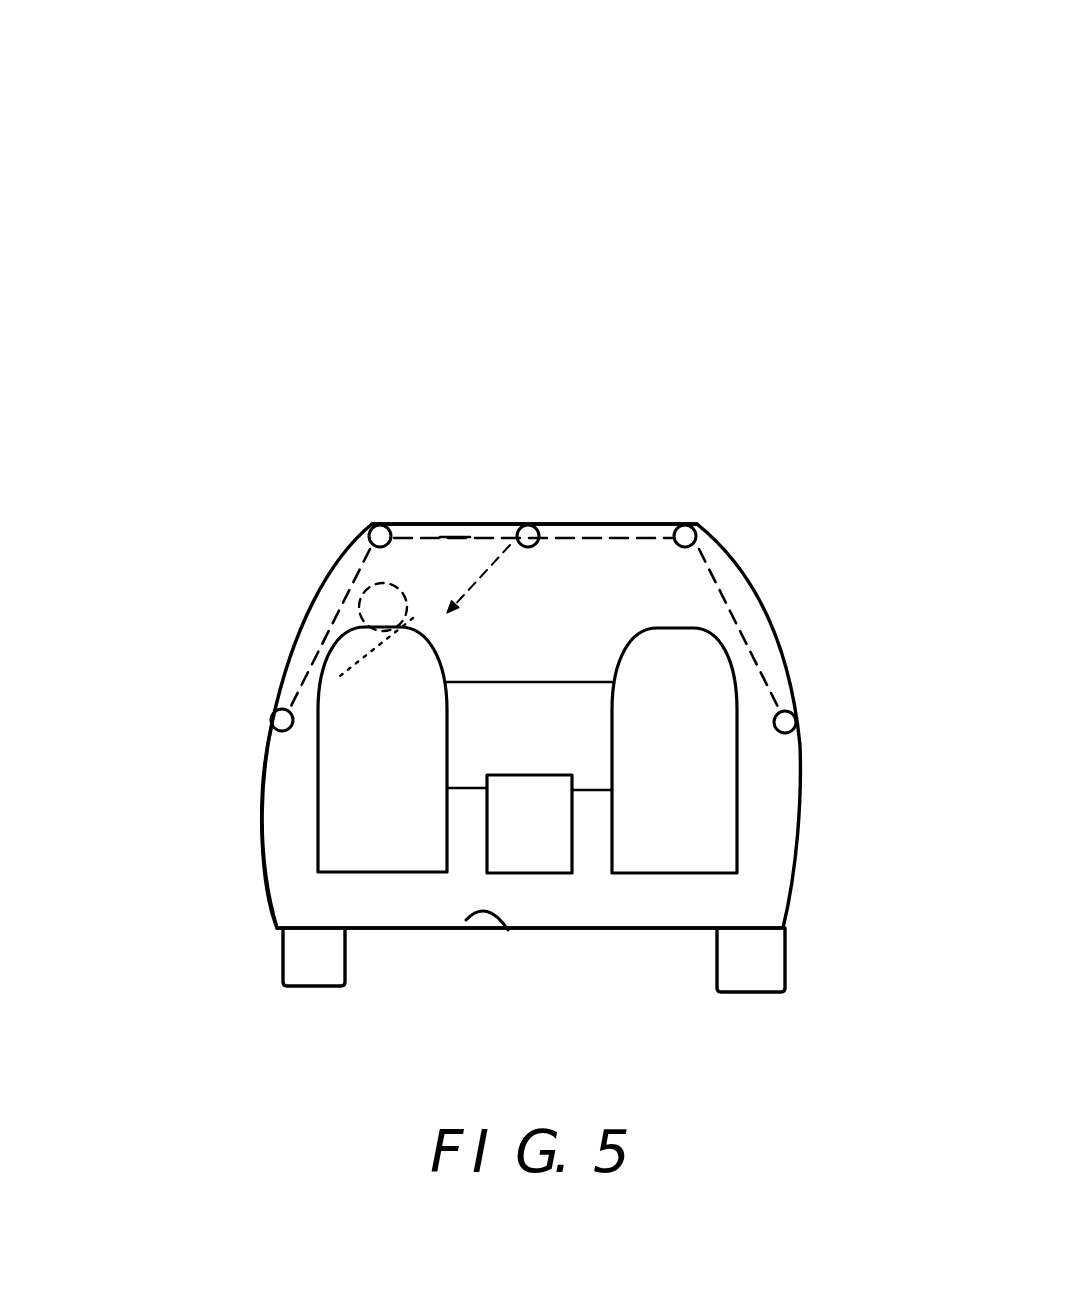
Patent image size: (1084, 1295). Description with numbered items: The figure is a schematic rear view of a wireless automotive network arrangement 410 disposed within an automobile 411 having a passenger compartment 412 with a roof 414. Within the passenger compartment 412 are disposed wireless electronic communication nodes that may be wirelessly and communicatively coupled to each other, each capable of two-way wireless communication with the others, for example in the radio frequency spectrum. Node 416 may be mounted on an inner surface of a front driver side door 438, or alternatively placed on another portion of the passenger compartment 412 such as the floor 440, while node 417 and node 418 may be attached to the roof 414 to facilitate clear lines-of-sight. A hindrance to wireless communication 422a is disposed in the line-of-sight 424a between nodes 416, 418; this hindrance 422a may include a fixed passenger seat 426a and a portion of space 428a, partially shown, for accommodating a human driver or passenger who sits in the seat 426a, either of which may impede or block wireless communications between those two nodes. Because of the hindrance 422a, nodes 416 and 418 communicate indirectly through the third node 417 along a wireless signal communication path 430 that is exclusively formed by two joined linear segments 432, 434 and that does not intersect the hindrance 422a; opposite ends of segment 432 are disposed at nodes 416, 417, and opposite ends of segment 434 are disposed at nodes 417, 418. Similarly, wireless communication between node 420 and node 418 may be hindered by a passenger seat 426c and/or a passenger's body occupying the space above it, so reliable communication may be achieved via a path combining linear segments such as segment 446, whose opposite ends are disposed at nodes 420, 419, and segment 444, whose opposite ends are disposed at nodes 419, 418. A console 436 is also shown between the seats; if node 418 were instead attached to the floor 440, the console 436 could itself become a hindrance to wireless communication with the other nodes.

The wireless automotive network arrangement 410 is at (193, 133).
The automobile 411 is at (788, 908).
The passenger compartment 412 is at (590, 857).
The roof 414 is at (650, 523).
The wireless electronic communication node 416 is at (272, 720).
The wireless electronic communication node 417 is at (373, 528).
The wireless electronic communication node 418 is at (535, 523).
The wireless electronic communication node 419 is at (688, 523).
The wireless electronic communication node 420 is at (798, 712).
The hindrance to wireless communication 422a is at (505, 579).
The line-of-sight 424a is at (430, 607).
The fixed passenger seat 426a is at (425, 830).
The passenger seat 426c is at (723, 828).
The portion of space 428a is at (358, 598).
The wireless signal communication path 430 is at (500, 527).
The linear segment 432 is at (337, 623).
The linear segment 434 is at (456, 537).
The console 436 is at (558, 847).
The front driver side door 438 is at (262, 798).
The floor 440 is at (466, 920).
The linear segment 444 is at (584, 523).
The linear segment 446 is at (727, 596).